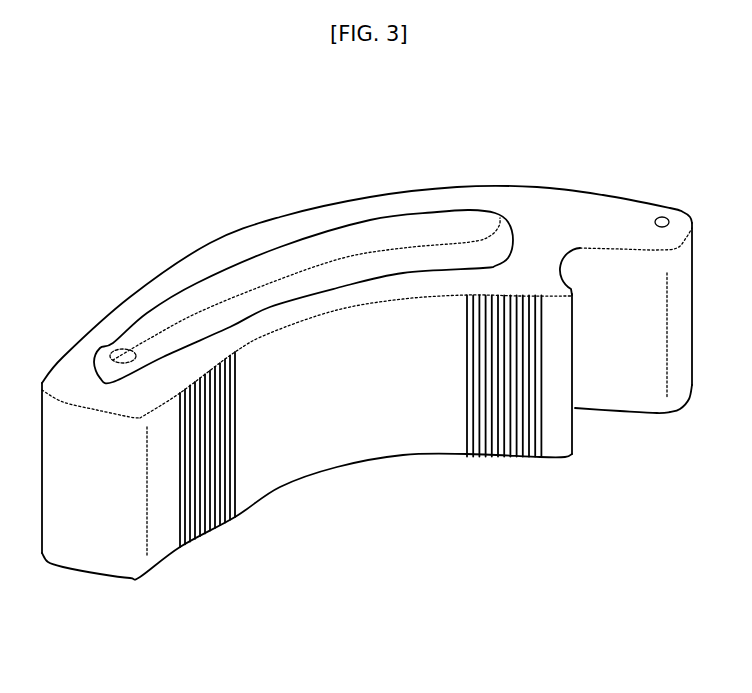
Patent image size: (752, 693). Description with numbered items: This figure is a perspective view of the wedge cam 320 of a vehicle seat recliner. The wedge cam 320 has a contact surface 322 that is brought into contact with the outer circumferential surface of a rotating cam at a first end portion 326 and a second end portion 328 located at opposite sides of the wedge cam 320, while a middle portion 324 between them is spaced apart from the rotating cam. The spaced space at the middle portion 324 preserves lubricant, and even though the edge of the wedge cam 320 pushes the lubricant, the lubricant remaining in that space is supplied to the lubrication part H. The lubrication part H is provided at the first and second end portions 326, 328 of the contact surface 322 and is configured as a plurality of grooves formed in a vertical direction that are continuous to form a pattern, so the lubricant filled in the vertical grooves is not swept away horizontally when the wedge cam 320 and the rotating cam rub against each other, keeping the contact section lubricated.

The wedge cam 320 is at (525, 200).
The contact surface 322 is at (273, 495).
The middle portion 324 is at (352, 440).
The first end portion 326 is at (187, 545).
The second end portion 328 is at (513, 462).
The lubrication part H is at (540, 417).